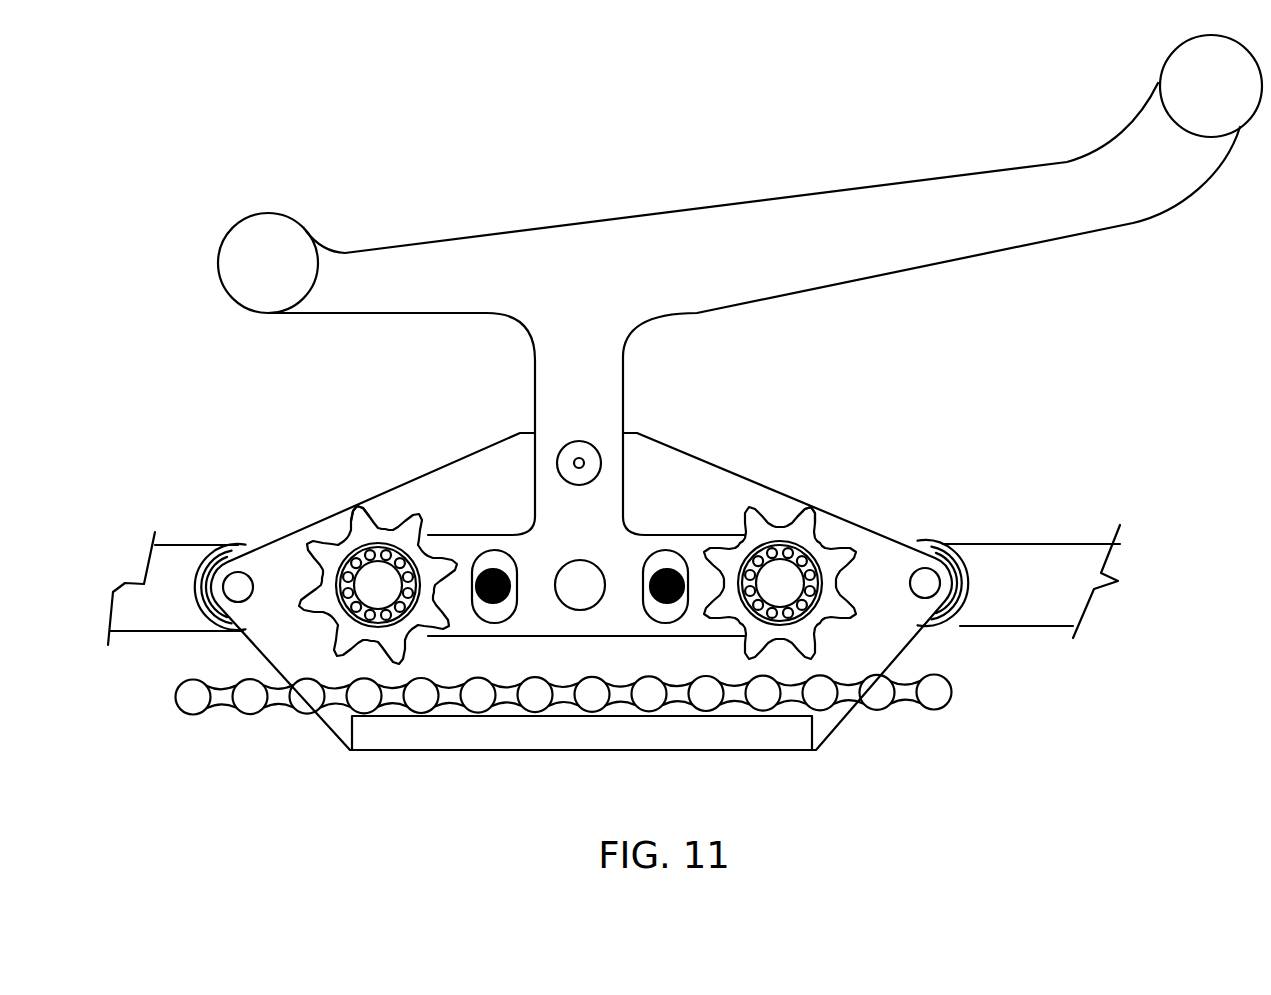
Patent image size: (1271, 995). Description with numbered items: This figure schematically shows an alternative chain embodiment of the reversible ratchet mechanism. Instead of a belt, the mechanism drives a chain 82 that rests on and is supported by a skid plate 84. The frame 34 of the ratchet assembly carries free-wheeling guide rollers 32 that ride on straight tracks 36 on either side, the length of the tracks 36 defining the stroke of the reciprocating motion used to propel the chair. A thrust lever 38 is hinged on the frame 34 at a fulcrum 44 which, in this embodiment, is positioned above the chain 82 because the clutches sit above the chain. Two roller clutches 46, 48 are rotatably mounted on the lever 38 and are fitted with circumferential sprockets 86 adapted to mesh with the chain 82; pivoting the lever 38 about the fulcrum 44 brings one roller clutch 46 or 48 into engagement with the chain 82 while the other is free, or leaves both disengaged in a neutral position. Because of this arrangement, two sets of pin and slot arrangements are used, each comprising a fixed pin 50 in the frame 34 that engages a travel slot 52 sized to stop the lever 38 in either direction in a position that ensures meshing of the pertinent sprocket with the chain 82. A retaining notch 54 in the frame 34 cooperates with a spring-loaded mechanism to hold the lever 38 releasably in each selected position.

The guide rollers 32 is at (228, 553).
The frame 34 is at (668, 445).
The straight tracks 36 is at (178, 568).
The thrust lever 38 is at (898, 185).
The fulcrum 44 is at (580, 562).
The roller clutch 46 is at (338, 620).
The roller clutch 48 is at (815, 626).
The fixed pin 50 is at (493, 572).
The travel slot 52 is at (511, 621).
The retaining notches 54 is at (579, 462).
The chain 82 is at (913, 708).
The skid plate 84 is at (458, 737).
The circumferential sprockets 86 is at (357, 510).